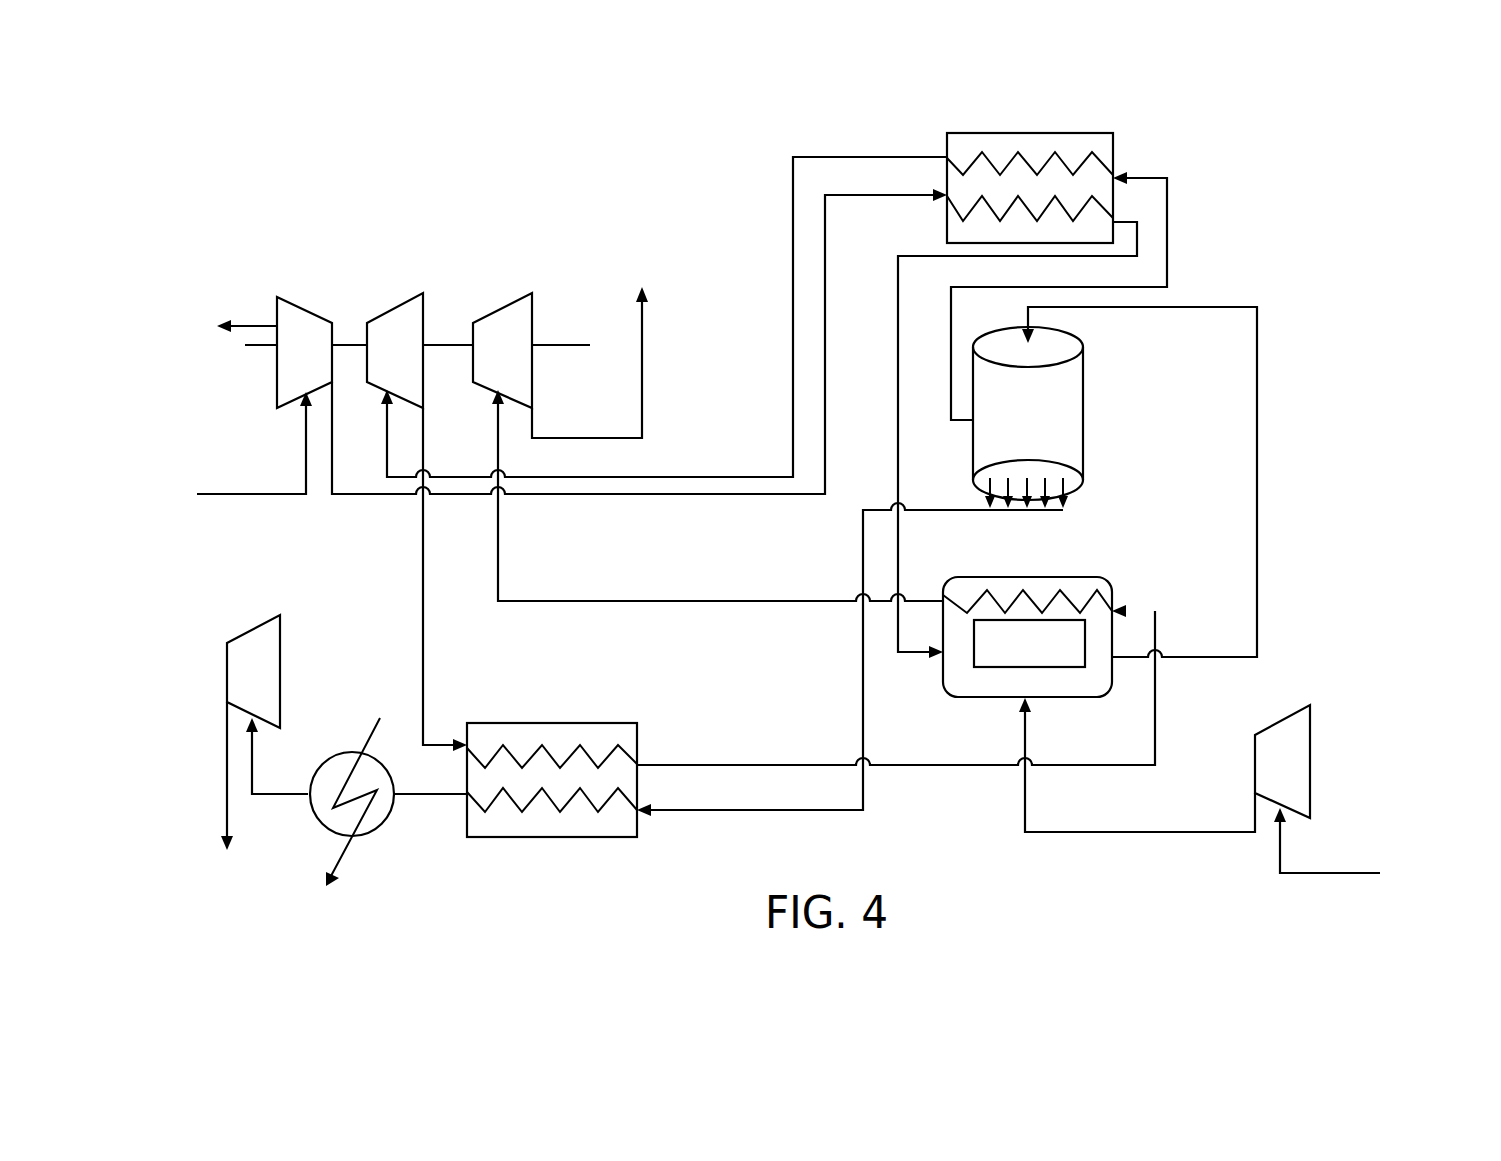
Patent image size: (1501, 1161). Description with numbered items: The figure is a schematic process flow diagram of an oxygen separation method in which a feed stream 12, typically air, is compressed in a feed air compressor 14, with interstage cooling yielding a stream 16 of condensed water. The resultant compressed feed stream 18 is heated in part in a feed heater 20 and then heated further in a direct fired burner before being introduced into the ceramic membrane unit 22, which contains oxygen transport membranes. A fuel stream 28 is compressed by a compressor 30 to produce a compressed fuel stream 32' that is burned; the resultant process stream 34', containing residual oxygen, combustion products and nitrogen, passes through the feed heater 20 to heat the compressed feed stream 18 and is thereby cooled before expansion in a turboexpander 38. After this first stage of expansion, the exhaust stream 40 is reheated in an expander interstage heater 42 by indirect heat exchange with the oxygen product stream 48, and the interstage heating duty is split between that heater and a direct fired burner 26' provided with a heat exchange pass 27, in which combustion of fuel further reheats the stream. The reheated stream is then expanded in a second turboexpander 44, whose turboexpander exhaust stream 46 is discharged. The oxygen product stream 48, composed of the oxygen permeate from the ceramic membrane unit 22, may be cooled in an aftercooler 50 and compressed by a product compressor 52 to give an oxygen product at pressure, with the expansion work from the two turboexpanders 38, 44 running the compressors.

The feed stream 12 is at (262, 494).
The feed air compressor 14 is at (283, 377).
The stream composed of condensed water 16 is at (255, 322).
The compressed feed stream 18 is at (639, 380).
The feed heater 20 is at (972, 243).
The ceramic membrane unit 22 is at (1103, 376).
The direct fired burner 26' is at (1024, 667).
The heat exchange pass 27 is at (1090, 590).
The fuel stream 28 is at (1338, 873).
The compressor 30 is at (1290, 758).
The compressed fuel stream 32' is at (1137, 800).
The process stream 34' is at (1114, 296).
The turboexpander 38 is at (404, 318).
The exhaust stream 40 is at (423, 622).
The expander interstage heater 42 is at (467, 818).
The turboexpander 44 is at (518, 318).
The turboexpander exhaust stream 46 is at (642, 368).
The oxygen product stream 48 is at (863, 683).
The aftercooler 50 is at (370, 820).
The product compressor 52 is at (262, 670).